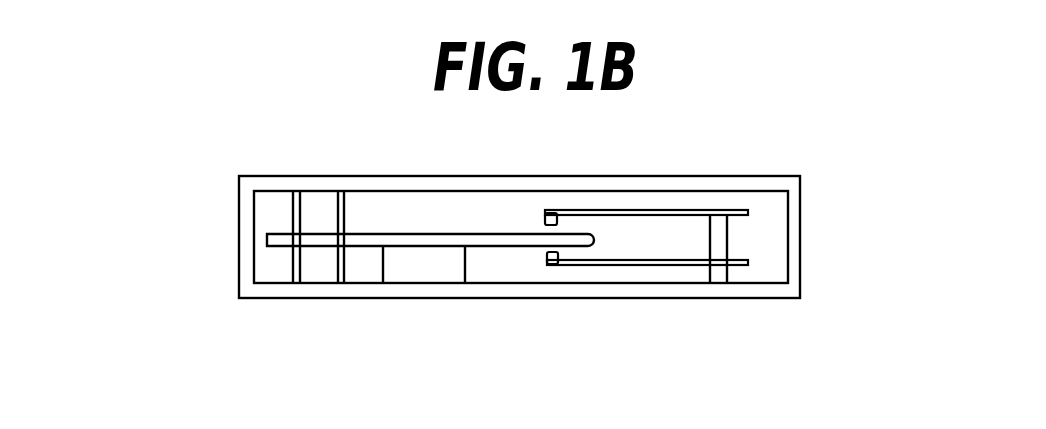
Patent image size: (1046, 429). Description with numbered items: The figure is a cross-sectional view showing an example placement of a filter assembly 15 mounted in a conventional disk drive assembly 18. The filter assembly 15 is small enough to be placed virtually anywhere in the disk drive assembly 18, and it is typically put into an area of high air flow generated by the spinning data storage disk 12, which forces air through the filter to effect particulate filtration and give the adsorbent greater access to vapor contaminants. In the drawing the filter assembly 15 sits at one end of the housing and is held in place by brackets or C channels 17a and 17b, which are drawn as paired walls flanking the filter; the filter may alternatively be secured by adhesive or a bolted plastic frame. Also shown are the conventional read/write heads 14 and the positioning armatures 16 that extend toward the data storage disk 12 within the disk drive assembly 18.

The data storage disk 12 is at (362, 240).
The read/write heads 14 is at (557, 258).
The filter assembly 15 is at (317, 216).
The positioning armatures 16 is at (663, 210).
The bracket or C channel 17a is at (293, 193).
The bracket or C channel 17b is at (342, 193).
The disk drive assembly 18 is at (792, 208).